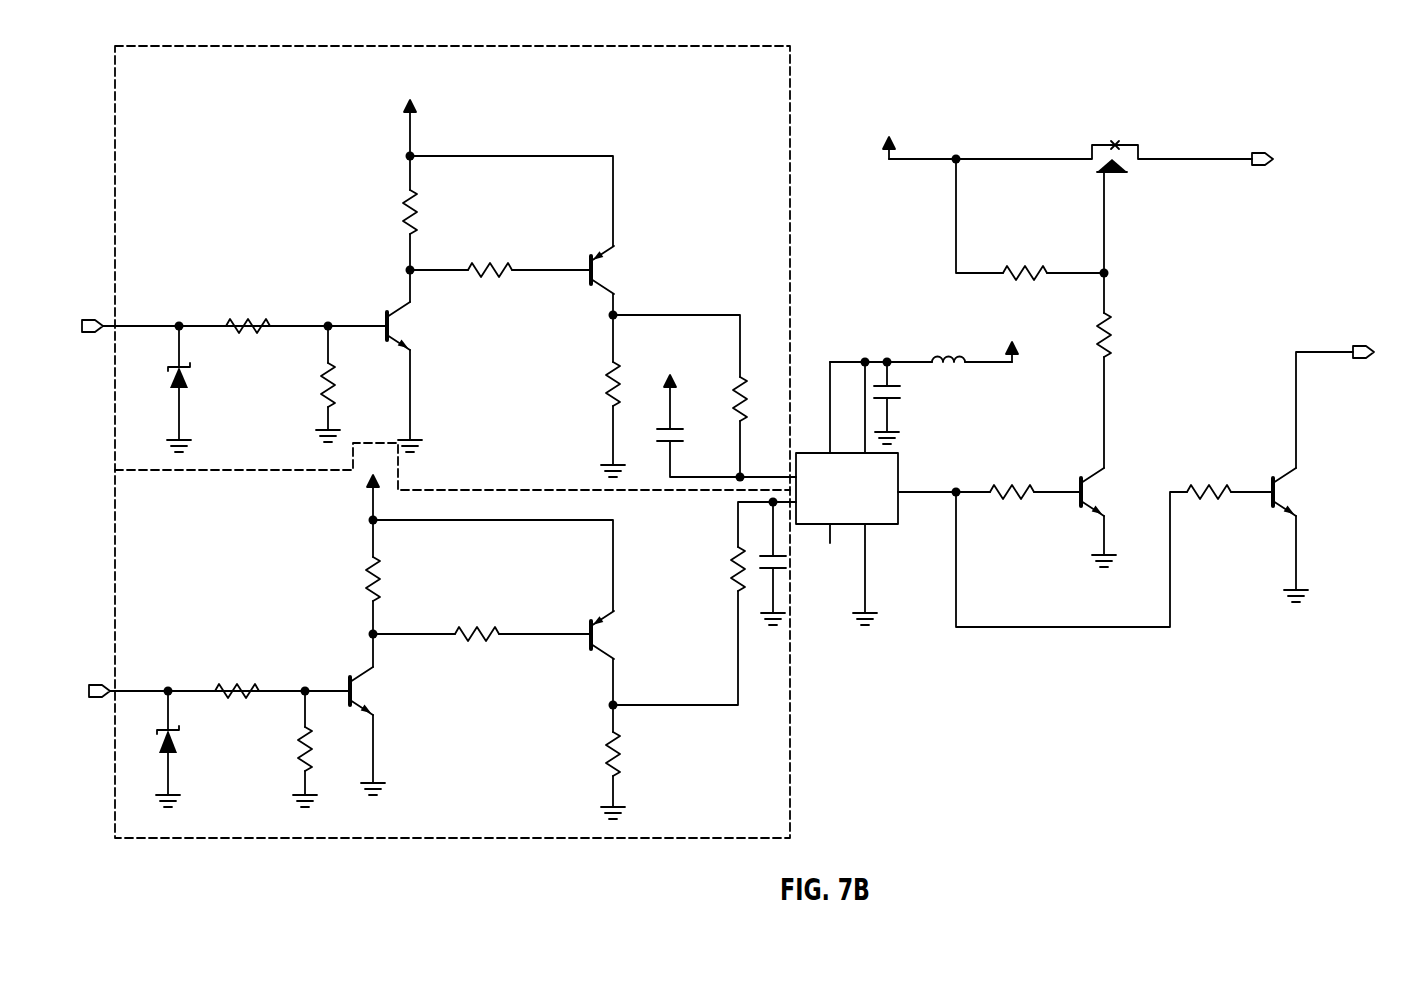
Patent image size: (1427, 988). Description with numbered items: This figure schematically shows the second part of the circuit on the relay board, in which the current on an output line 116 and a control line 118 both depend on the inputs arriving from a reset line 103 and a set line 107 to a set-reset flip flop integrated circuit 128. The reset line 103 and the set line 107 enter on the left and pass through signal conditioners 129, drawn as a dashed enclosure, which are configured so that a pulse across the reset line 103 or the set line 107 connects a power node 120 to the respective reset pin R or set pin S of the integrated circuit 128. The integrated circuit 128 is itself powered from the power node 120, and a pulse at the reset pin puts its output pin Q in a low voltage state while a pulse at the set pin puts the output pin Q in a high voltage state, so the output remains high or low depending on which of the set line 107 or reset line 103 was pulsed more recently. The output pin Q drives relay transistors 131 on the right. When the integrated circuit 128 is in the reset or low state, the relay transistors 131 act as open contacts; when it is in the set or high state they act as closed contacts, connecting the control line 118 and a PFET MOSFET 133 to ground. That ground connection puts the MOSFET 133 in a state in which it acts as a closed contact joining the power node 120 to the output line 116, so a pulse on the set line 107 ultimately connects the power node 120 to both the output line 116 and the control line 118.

The reset line 103 is at (71, 326).
The set line 107 is at (81, 691).
The output line 116 is at (1281, 159).
The control line 118 is at (1383, 354).
The power node 120 is at (694, 294).
The set-reset flip flop integrated circuit 128 is at (893, 520).
The signal conditioners 129 is at (180, 46).
The relay transistors 131 is at (1077, 481).
The PFET MOSFET 133 is at (1125, 187).